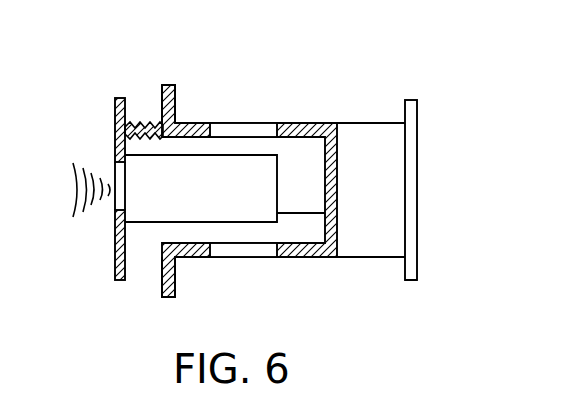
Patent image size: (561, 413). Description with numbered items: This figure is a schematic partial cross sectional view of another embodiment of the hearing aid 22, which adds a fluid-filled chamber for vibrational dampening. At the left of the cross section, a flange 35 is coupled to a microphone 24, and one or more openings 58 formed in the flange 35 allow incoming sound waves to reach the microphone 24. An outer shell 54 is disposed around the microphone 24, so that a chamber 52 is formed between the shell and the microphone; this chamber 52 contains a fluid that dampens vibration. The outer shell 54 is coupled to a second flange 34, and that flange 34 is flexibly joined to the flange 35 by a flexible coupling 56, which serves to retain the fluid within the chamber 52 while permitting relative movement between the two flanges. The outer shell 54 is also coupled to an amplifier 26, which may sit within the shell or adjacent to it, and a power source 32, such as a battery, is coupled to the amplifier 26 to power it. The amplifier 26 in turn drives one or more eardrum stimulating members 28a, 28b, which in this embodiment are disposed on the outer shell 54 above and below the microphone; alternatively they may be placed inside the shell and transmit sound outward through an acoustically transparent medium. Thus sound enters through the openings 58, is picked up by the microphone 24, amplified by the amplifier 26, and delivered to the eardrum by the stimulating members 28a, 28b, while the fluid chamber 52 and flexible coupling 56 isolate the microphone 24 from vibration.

The hearing aid 22 is at (407, 87).
The microphone 24 is at (193, 205).
The amplifier 26 is at (358, 258).
The eardrum stimulating member 28a is at (242, 123).
The eardrum stimulating member 28b is at (243, 247).
The power source 32 is at (417, 272).
The flange 34 is at (173, 98).
The flange 35 is at (113, 260).
The chamber 52 is at (310, 157).
The outer shell 54 is at (315, 123).
The flexible coupling 56 is at (140, 122).
The openings 58 is at (117, 205).